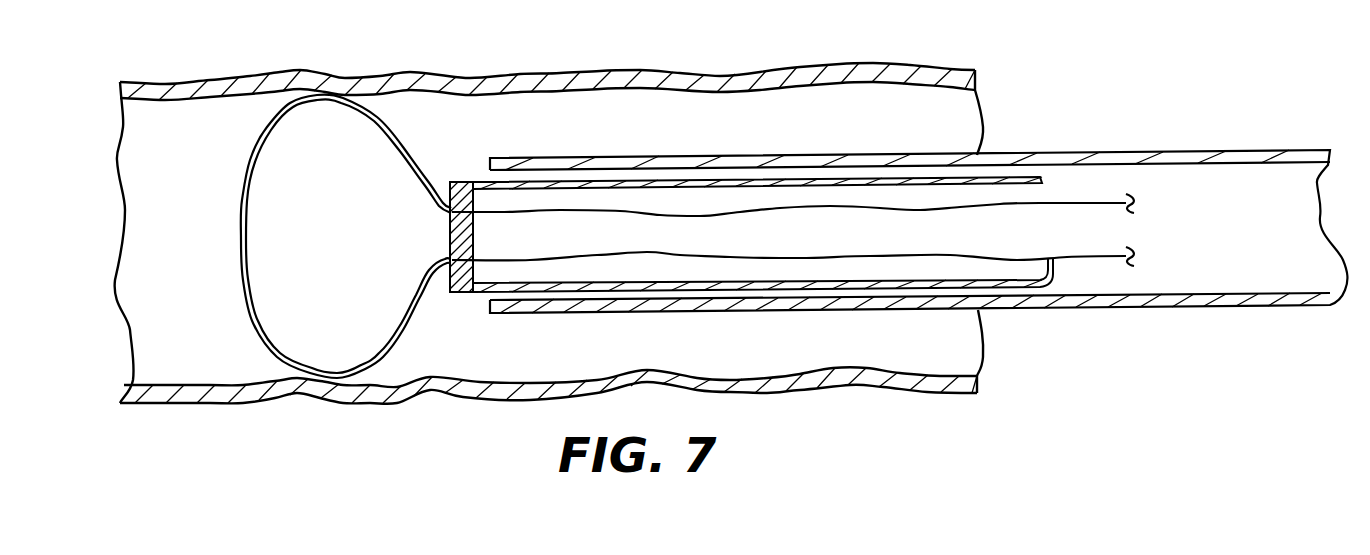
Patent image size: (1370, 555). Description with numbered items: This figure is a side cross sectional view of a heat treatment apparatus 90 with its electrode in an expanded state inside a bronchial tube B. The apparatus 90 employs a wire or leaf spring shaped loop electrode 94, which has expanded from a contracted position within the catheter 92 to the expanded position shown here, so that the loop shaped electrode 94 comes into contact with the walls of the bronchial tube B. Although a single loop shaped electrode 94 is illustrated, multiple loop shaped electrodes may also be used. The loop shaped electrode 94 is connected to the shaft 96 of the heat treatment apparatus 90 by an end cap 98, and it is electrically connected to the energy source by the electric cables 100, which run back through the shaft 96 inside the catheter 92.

The bronchial tube B is at (669, 74).
The heat treatment apparatus 90 is at (803, 93).
The catheter 92 is at (1100, 153).
The loop electrode 94 is at (387, 355).
The shaft 96 is at (563, 292).
The end cap 98 is at (436, 288).
The electric cables 100 is at (1078, 258).